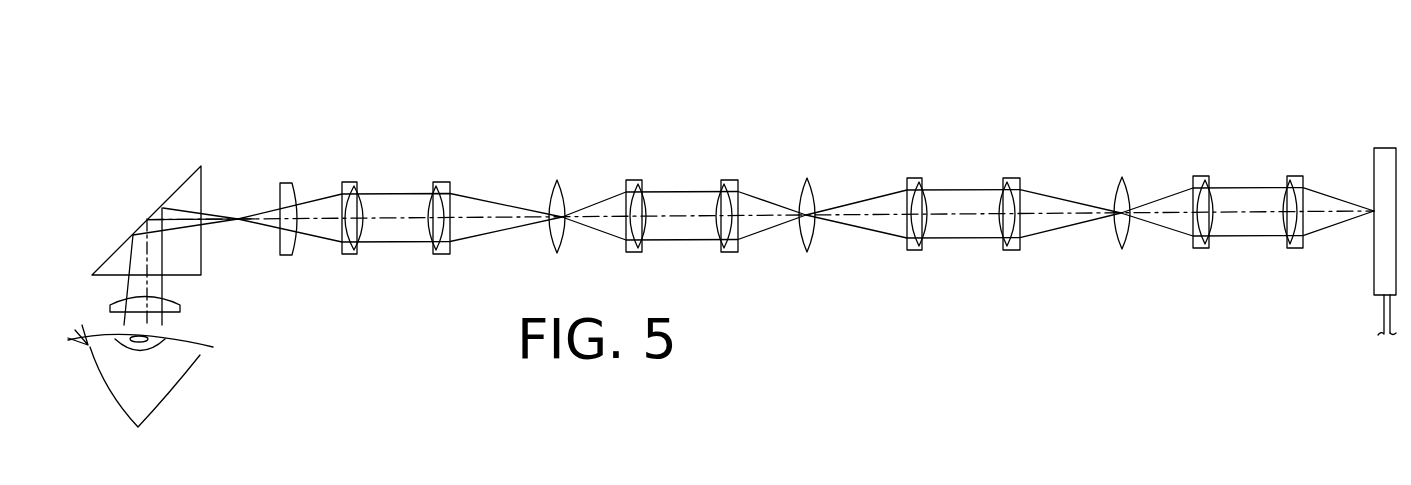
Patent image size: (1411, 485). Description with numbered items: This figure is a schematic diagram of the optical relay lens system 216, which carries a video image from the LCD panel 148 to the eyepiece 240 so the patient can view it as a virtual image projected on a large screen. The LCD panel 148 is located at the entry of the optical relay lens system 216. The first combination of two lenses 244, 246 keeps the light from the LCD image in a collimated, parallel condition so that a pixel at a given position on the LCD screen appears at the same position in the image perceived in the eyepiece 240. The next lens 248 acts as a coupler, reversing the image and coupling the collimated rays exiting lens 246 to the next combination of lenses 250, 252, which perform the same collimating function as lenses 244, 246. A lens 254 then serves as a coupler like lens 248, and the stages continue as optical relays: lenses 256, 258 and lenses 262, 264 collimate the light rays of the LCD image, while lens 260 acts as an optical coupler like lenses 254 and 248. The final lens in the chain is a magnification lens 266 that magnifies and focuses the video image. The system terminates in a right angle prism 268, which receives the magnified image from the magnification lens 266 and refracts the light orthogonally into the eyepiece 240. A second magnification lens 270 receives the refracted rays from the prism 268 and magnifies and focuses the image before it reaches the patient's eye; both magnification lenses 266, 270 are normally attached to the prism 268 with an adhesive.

The LCD panel 148 is at (1385, 148).
The optical relay lens system 216 is at (831, 285).
The eyepiece 240 is at (162, 222).
The lens 244 is at (1298, 176).
The lens 246 is at (1205, 176).
The lens 248 is at (1122, 177).
The lens 250 is at (1010, 178).
The lens 252 is at (915, 178).
The lens 254 is at (806, 178).
The lens 256 is at (730, 180).
The lens 258 is at (636, 180).
The lens 260 is at (556, 180).
The lens 262 is at (450, 182).
The lens 264 is at (355, 182).
The magnification lens 266 is at (290, 183).
The right angle prism 268 is at (185, 180).
The second magnification lens 270 is at (182, 304).